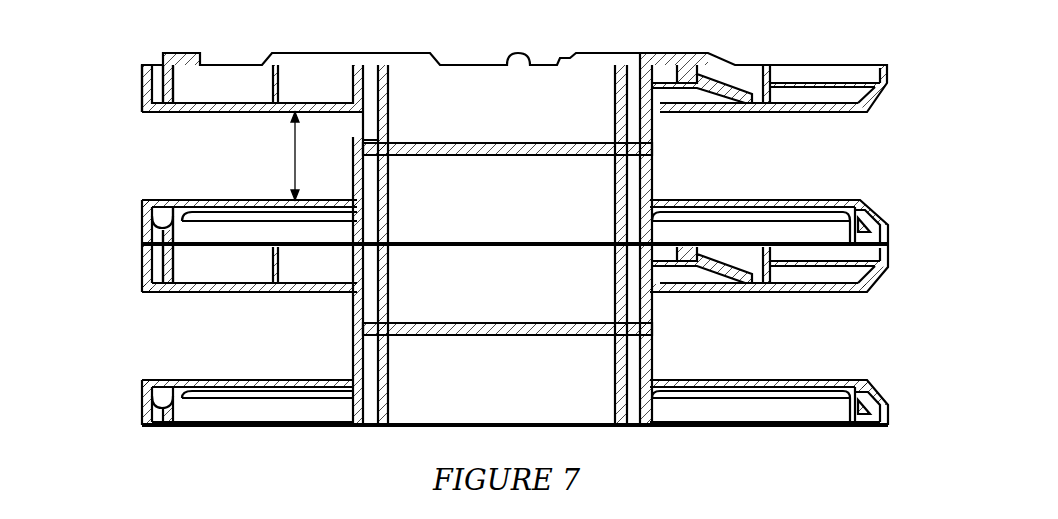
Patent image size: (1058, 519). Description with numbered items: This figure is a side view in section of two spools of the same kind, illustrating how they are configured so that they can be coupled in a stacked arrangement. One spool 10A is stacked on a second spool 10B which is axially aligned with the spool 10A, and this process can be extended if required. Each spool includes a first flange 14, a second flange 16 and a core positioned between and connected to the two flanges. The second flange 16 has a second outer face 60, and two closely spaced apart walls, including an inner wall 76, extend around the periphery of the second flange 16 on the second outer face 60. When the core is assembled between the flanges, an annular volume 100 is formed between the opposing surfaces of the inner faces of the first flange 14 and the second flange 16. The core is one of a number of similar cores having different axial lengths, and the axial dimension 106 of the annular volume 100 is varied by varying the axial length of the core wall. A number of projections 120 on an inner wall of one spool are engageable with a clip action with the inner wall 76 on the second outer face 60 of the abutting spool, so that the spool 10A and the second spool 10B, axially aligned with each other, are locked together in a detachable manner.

The spool 10A is at (843, 152).
The second spool 10B is at (843, 346).
The first flange 14 is at (143, 77).
The second flange 16 is at (142, 228).
The second outer face 60 is at (283, 389).
The inner wall 76 is at (177, 230).
The annular volume 100 is at (142, 167).
The axial length 106 is at (292, 153).
The projections 120 is at (173, 73).